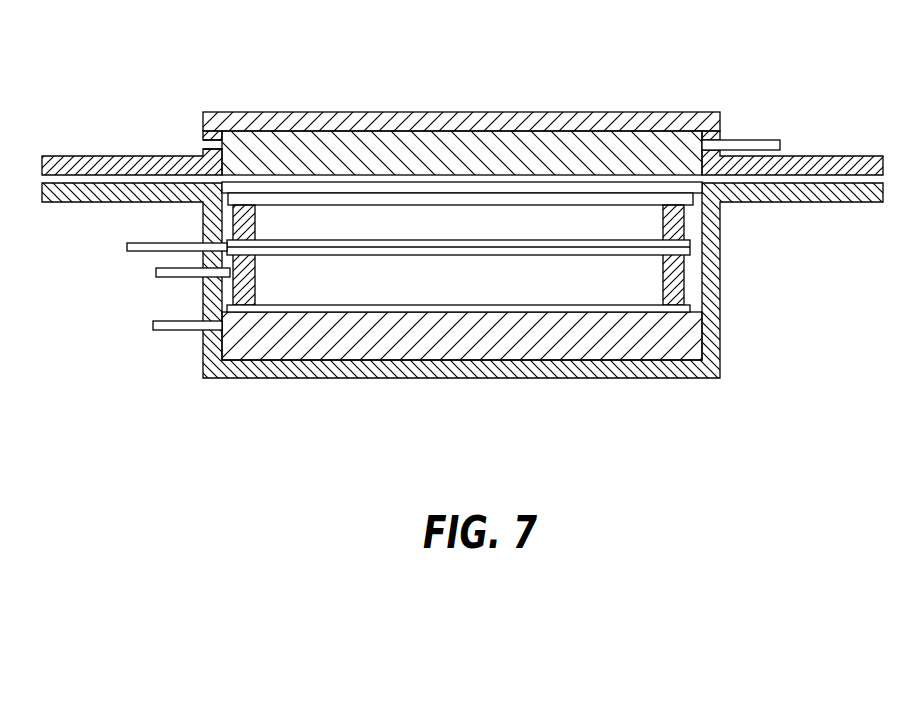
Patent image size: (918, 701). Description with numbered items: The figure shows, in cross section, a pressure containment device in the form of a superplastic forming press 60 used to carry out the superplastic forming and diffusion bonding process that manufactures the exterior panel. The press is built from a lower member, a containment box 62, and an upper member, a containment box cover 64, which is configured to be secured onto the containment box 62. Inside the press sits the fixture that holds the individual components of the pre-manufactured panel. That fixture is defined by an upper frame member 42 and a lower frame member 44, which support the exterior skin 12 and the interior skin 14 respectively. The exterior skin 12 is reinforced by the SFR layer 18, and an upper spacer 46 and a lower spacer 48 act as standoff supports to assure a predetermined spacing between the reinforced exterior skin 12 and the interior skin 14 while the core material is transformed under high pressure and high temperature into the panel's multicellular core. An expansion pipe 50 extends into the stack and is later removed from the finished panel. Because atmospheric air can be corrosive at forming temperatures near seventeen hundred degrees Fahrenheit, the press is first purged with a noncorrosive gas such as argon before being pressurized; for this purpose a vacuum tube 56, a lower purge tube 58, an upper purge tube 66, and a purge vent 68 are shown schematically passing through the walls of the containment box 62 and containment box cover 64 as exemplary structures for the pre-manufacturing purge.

The superplastic forming press 60 is at (462, 225).
The containment box 62 is at (717, 310).
The containment box cover 64 is at (488, 123).
The upper purge tube 66 is at (745, 143).
The purge vent 68 is at (203, 145).
The upper frame member 42 is at (250, 143).
The lower frame member 44 is at (550, 348).
The exterior skin 12 is at (367, 188).
The SFR layer 18 is at (413, 200).
The interior skin 14 is at (307, 307).
The upper spacer 46 is at (662, 227).
The lower spacer 48 is at (662, 282).
The expansion pipe 50 is at (179, 242).
The vacuum tube 56 is at (177, 331).
The lower purge tube 58 is at (178, 277).